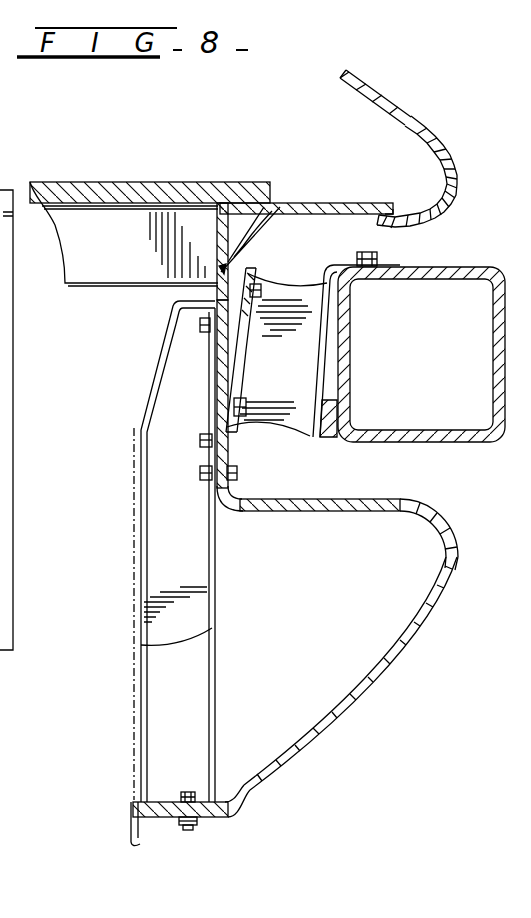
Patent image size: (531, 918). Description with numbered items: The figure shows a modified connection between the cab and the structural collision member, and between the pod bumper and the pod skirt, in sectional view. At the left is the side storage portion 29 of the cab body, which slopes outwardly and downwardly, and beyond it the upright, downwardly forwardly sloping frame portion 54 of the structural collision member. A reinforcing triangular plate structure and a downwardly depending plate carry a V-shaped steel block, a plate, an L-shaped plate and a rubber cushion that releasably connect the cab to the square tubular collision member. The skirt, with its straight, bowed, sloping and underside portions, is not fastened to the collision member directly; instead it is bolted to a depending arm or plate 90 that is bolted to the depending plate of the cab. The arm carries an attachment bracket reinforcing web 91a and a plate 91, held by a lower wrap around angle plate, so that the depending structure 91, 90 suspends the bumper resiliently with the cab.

The side storage portion 29 is at (0, 258).
The frame portion 54 is at (0, 352).
The depending arm or plate 90 is at (141, 645).
The plate 91 is at (140, 518).
The attachment bracket reinforcing web 91a is at (194, 561).